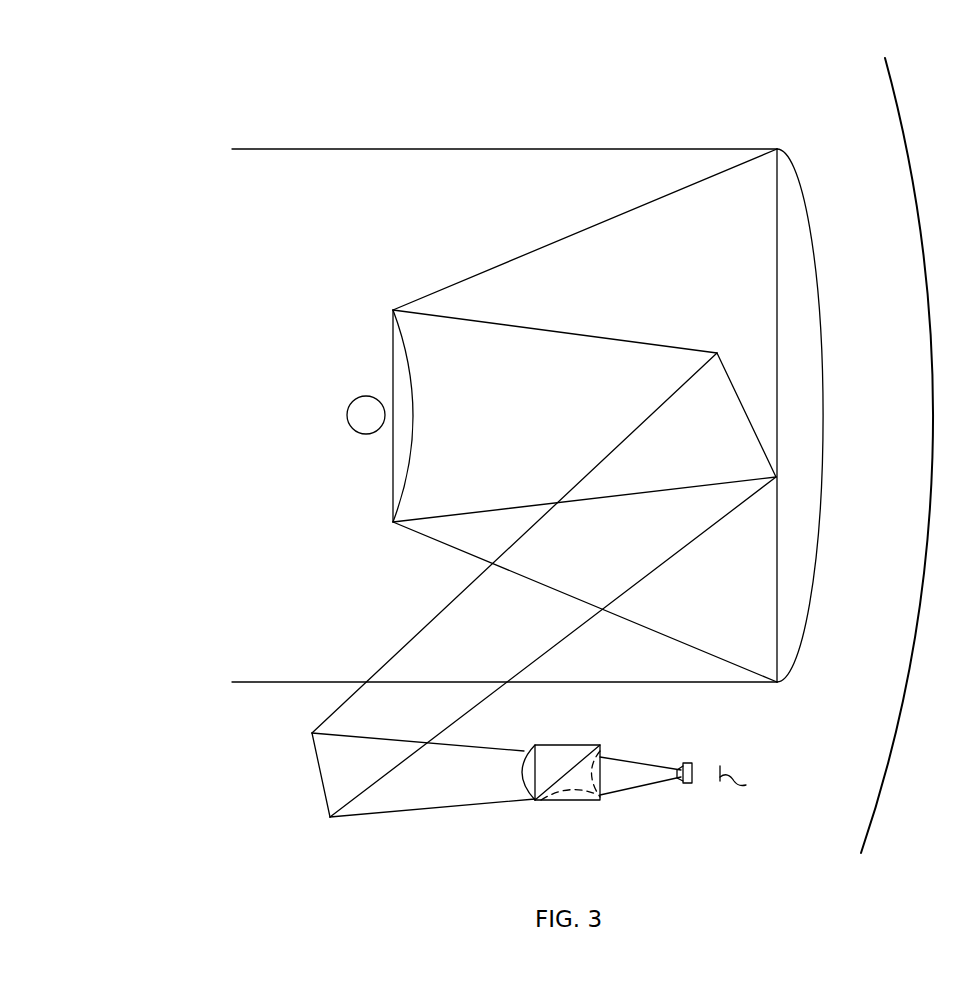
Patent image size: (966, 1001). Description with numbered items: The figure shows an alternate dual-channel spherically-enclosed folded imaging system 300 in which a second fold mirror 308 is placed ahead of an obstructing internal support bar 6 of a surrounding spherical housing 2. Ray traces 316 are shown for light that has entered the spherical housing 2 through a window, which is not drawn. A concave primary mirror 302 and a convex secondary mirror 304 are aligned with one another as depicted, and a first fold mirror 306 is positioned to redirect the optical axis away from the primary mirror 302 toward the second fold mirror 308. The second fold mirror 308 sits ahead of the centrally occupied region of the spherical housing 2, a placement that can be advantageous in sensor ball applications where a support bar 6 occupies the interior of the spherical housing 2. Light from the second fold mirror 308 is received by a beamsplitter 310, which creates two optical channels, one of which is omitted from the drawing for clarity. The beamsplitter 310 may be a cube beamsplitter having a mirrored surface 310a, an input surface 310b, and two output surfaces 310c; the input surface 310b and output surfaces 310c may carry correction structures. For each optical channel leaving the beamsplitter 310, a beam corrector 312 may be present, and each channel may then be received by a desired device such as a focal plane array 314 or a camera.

The spherical housing 2 is at (905, 135).
The internal support bar 6 is at (346, 416).
The spherically-enclosed folded imaging system 300 is at (128, 444).
The concave primary mirror 302 is at (816, 262).
The convex secondary mirror 304 is at (392, 490).
The first fold mirror 306 is at (728, 357).
The second fold mirror 308 is at (320, 786).
The beamsplitter 310 is at (561, 768).
The mirrored surface 310a is at (553, 779).
The input surface 310b is at (522, 785).
The output surfaces 310c is at (599, 791).
The beam corrector 312 is at (686, 760).
The focal plane array 314 is at (755, 779).
The ray traces 316 is at (278, 148).